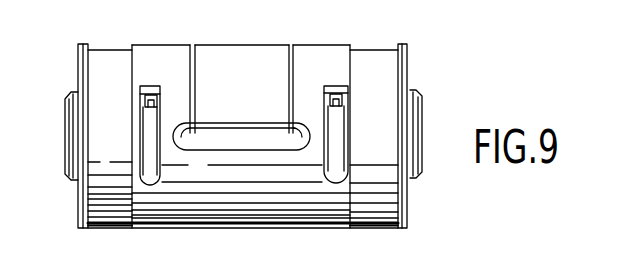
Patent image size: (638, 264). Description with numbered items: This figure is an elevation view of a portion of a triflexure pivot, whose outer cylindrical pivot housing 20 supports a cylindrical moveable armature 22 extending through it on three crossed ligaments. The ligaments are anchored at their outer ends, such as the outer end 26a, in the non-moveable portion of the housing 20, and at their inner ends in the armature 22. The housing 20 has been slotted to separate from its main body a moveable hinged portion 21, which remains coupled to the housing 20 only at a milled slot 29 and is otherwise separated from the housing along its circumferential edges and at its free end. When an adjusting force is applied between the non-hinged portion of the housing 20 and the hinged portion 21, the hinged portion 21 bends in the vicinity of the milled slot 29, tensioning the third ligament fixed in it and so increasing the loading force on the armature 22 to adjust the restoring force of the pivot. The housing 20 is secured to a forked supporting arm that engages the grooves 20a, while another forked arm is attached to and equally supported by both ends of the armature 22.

The pivot housing 20 is at (150, 47).
The grooves 20a is at (109, 229).
The hinged portion 21 is at (237, 48).
The armature 22 is at (77, 93).
The outer end of ligament 26a is at (147, 86).
The milled slot 29 is at (240, 135).